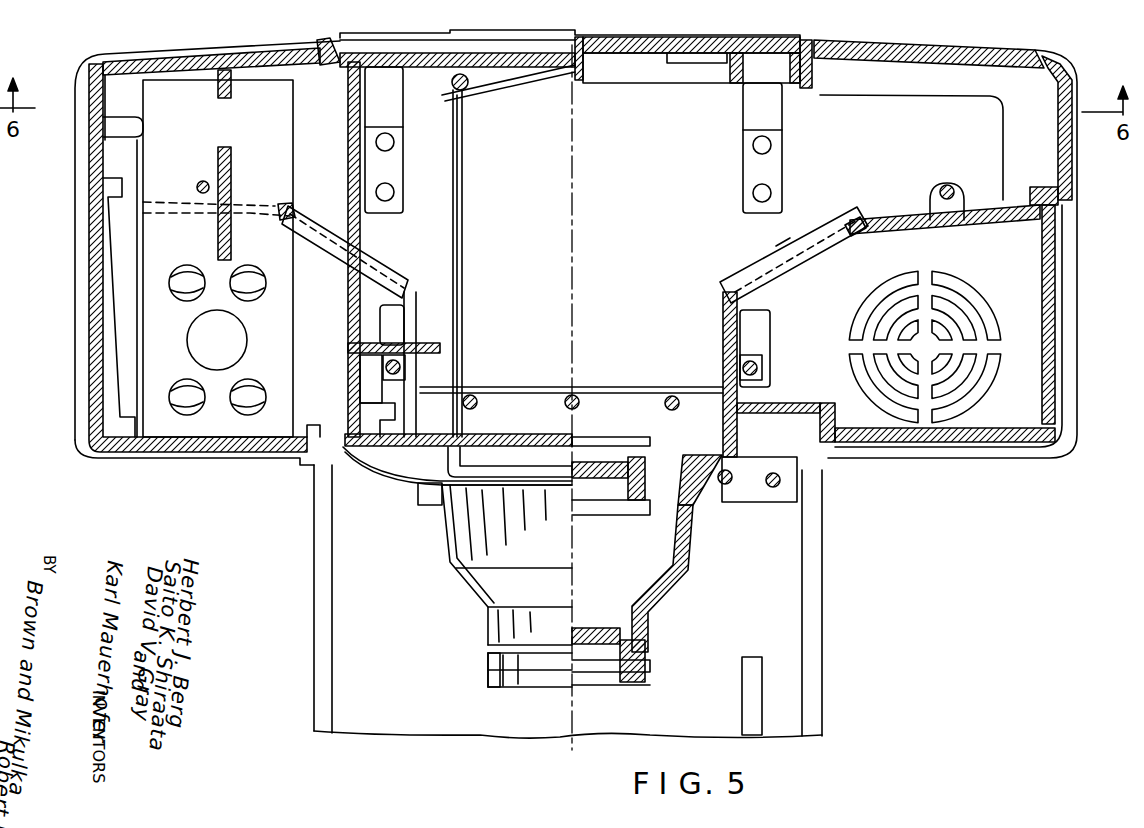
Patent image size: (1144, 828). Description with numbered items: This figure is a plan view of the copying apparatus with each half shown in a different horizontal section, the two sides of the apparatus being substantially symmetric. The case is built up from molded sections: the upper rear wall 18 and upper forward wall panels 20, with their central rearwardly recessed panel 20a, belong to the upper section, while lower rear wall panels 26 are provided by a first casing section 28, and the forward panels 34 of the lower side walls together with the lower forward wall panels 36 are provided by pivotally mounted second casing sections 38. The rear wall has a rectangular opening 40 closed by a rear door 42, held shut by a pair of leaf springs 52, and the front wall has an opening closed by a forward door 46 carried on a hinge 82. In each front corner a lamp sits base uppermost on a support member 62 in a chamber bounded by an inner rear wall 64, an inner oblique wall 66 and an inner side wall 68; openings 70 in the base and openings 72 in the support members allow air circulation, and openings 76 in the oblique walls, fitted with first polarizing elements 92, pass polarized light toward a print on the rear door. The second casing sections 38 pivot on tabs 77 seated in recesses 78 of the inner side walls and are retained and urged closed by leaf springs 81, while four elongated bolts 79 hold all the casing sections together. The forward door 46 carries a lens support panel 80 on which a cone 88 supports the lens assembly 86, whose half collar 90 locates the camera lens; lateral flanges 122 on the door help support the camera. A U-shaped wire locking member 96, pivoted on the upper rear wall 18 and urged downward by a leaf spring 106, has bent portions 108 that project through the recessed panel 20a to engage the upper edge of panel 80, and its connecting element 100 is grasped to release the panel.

The upper rear wall 18 is at (405, 70).
The upper forward wall panels 20 is at (213, 450).
The central rearwardly recessed panel 20a is at (480, 436).
The lower rear wall panels 26 is at (996, 58).
The first casing section 28 is at (1080, 74).
The forward panels of the lower side walls 34 is at (1055, 340).
The lower forward wall panels 36 is at (935, 447).
The second casing sections 38 is at (1043, 438).
The rectangular opening 40 is at (822, 44).
The rear door 42 is at (697, 65).
The forward door 46 is at (690, 607).
The leaf springs 52 is at (396, 118).
The support members 62 is at (282, 305).
The inner rear wall 64 is at (232, 205).
The inner oblique wall 66 is at (392, 275).
The inner side wall 68 is at (416, 322).
The openings 70 is at (940, 305).
The openings 72 is at (190, 266).
The openings 76 is at (283, 212).
The tabs or projections 77 is at (745, 446).
The recesses 78 is at (760, 290).
The elongated bolts 79 is at (402, 367).
The lens support panel 80 is at (708, 505).
The leaf springs 81 is at (380, 363).
The hinge 82 is at (622, 395).
The lens assembly 86 is at (636, 492).
The cone 88 is at (462, 545).
The half collar 90 is at (642, 512).
The first polarizing elements 92 is at (793, 250).
The locking member 96 is at (464, 200).
The connecting element 100 is at (525, 470).
The leaf spring 106 is at (482, 88).
The bent portions 108 is at (445, 458).
The lateral flanges 122 is at (320, 590).